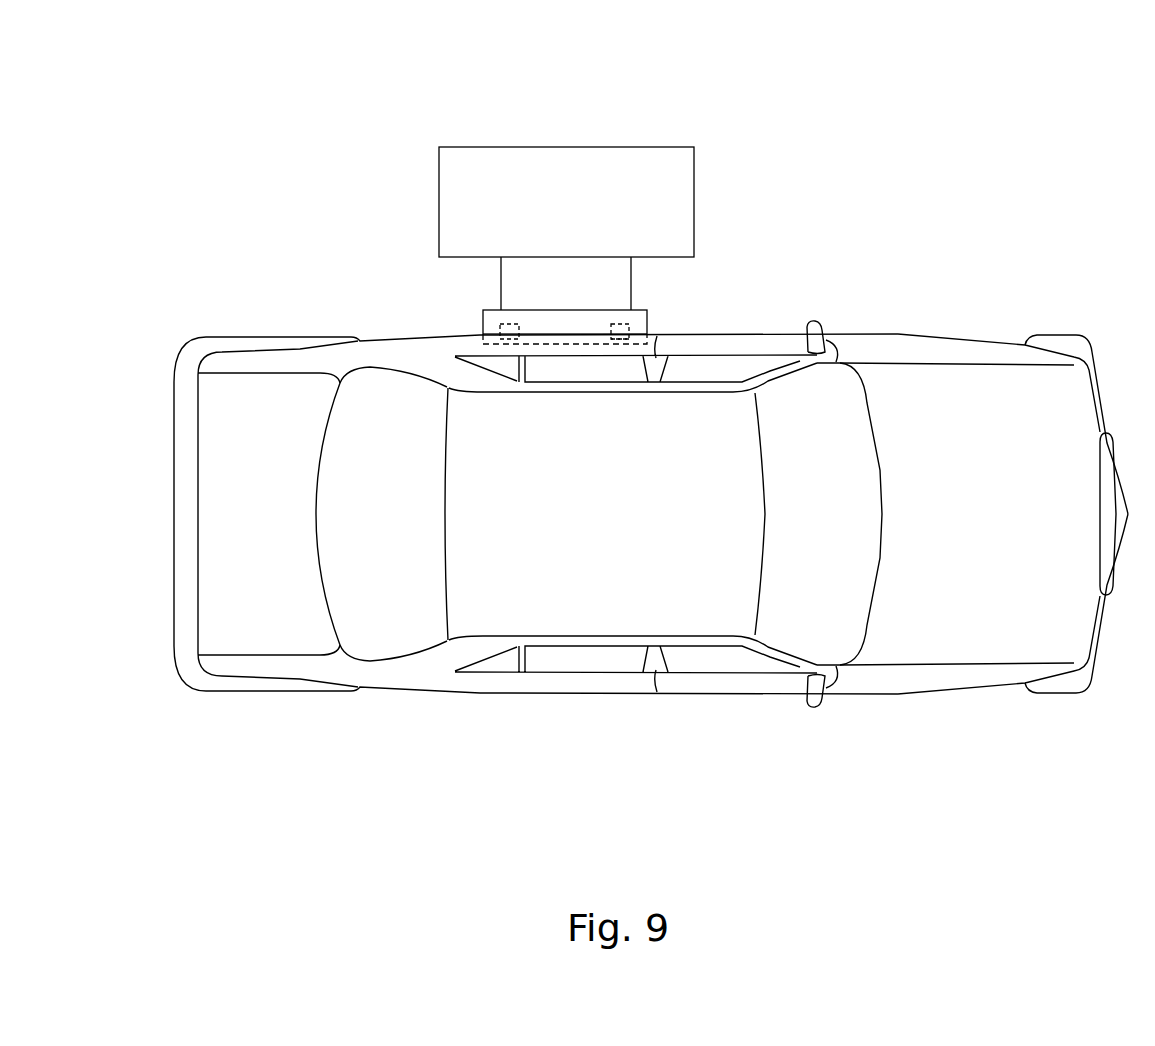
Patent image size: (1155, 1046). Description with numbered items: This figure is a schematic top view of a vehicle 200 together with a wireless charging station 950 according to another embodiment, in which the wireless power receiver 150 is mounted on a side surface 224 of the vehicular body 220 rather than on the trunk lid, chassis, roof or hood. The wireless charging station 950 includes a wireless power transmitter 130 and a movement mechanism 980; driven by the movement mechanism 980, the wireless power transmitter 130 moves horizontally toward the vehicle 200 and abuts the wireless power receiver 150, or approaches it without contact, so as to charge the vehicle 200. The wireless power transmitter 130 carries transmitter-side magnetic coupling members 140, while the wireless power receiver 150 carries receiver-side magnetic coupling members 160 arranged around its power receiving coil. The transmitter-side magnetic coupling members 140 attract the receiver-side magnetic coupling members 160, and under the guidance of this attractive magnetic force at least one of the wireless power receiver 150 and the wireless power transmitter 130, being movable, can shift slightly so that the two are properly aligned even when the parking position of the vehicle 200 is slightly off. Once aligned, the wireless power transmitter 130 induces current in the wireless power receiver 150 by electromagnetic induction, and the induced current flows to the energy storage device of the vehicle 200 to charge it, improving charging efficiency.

The wireless charging station 950 is at (665, 118).
The movement mechanism 980 is at (510, 278).
The wireless power transmitter 130 is at (490, 320).
The transmitter-side magnetic coupling members 140 is at (629, 337).
The wireless power receiver 150 is at (537, 342).
The receiver-side magnetic coupling members 160 is at (630, 340).
The vehicle 200 is at (651, 453).
The vehicular body 220 is at (945, 438).
The side surface 224 is at (999, 383).